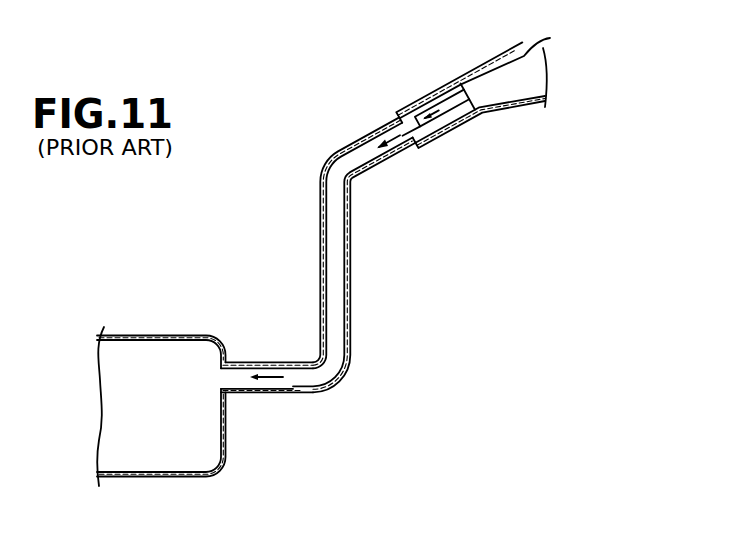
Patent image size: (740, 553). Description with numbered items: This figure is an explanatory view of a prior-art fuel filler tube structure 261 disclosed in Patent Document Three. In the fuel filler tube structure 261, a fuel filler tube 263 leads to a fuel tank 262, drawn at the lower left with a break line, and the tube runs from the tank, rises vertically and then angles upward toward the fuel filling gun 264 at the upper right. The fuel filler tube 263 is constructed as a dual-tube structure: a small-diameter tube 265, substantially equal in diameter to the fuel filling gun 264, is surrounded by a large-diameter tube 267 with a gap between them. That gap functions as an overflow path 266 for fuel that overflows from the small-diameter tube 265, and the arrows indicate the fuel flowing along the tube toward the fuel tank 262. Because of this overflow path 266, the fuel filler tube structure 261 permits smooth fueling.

The fuel filler tube structure 261 is at (386, 217).
The fuel tank 262 is at (145, 333).
The fuel filler tube 263 is at (268, 360).
The fuel filling gun 264 is at (550, 38).
The small-diameter tube 265 is at (353, 284).
The overflow path 266 is at (322, 267).
The large-diameter tube 267 is at (353, 236).